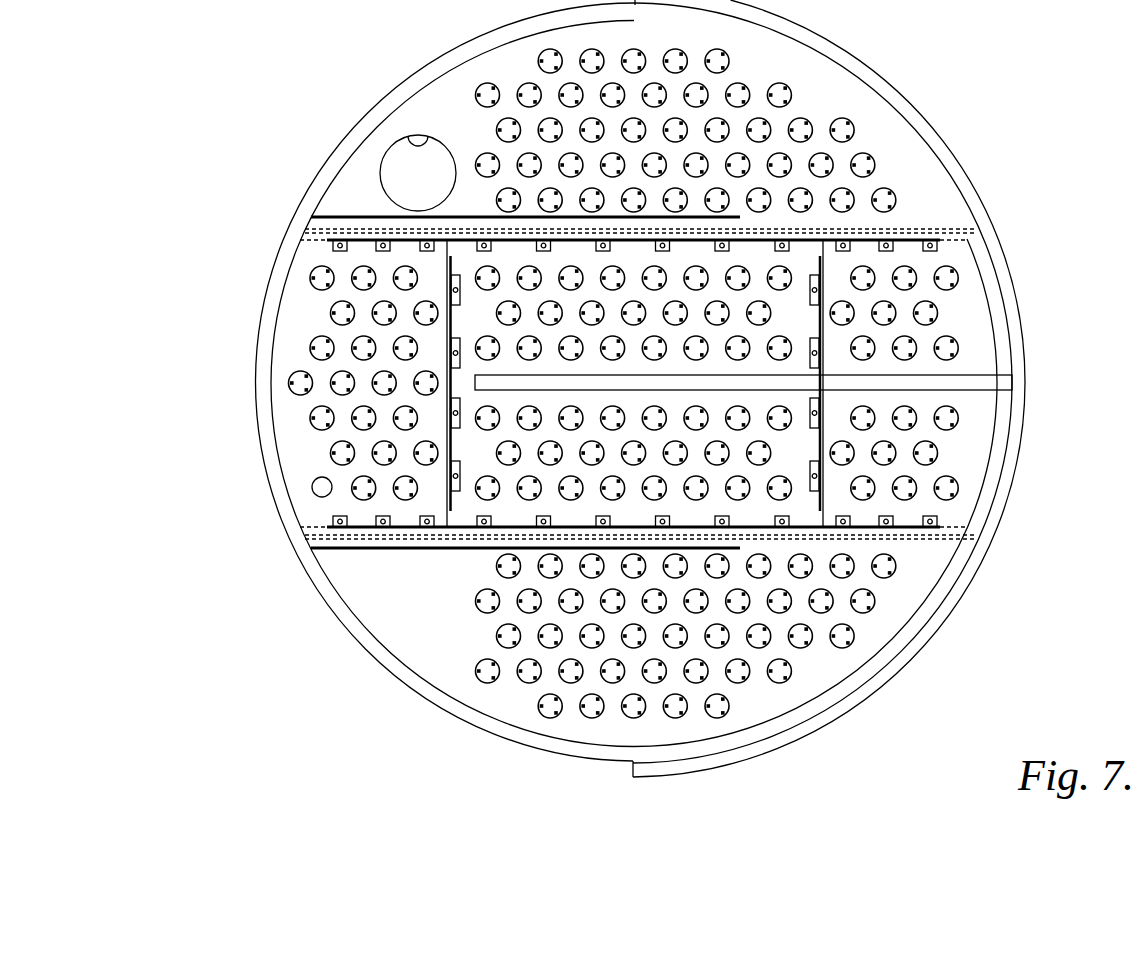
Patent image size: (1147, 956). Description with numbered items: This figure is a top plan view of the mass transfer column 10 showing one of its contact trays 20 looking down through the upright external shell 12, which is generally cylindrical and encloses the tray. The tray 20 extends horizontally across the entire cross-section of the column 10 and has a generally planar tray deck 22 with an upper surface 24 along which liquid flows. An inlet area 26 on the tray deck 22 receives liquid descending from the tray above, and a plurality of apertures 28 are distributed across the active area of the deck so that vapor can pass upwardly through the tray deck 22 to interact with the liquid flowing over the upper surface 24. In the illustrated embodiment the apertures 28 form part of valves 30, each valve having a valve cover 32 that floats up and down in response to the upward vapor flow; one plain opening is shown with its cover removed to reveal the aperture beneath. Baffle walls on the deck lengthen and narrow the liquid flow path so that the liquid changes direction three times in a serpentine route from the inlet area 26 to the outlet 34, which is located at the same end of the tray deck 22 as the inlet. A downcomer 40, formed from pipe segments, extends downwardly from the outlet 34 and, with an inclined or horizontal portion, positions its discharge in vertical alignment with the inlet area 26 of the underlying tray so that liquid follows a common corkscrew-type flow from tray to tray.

The mass transfer column 10 is at (924, 112).
The external shell 12 is at (975, 206).
The contact tray 20 is at (975, 297).
The tray deck 22 is at (975, 327).
The upper surface 24 is at (985, 352).
The inlet area 26 is at (380, 595).
The apertures 28 is at (311, 487).
The valve 30 is at (316, 420).
The valve cover 32 is at (296, 380).
The outlet 34 is at (417, 137).
The downcomer 40 is at (419, 182).